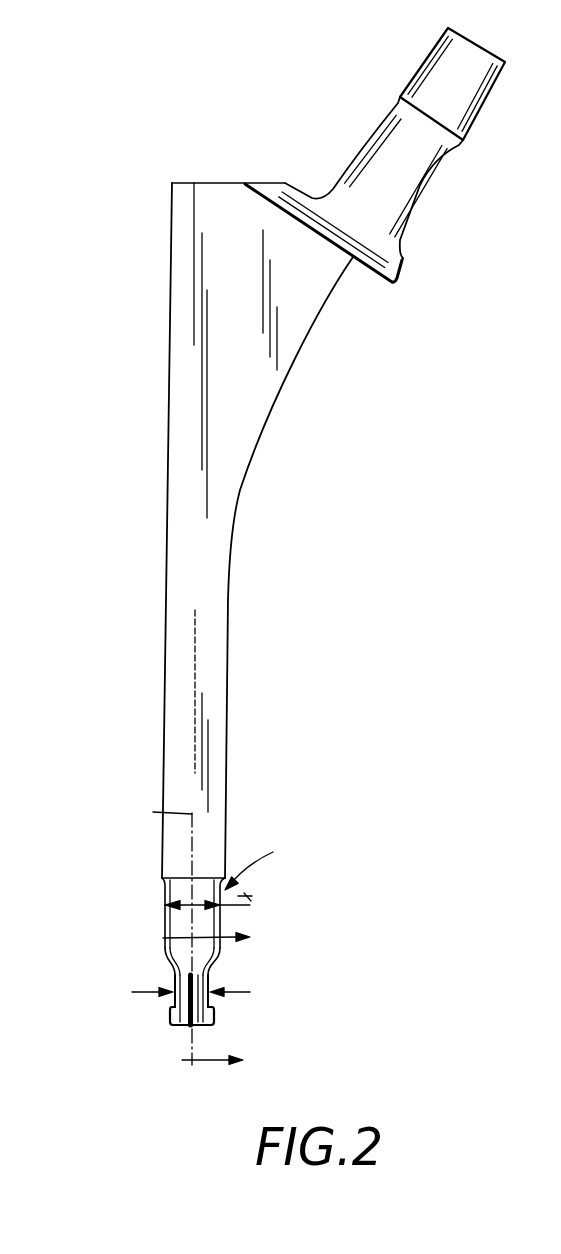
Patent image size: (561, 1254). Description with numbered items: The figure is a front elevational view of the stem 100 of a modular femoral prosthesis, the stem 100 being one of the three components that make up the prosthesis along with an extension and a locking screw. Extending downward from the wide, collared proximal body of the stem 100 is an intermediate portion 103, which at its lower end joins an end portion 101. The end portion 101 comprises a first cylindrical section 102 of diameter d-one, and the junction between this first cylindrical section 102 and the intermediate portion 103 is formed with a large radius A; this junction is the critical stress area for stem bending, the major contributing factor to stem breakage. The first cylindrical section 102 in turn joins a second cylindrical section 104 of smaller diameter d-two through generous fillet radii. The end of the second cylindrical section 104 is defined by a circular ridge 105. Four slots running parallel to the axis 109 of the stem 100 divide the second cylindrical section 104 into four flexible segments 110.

The stem 100 is at (264, 555).
The end portion 101 is at (112, 907).
The first cylindrical section 102 is at (163, 938).
The intermediate portion 103 is at (163, 708).
The second cylindrical section 104 is at (173, 977).
The circular ridge 105 is at (187, 1016).
The axis 109 is at (153, 812).
The flexible segments 110 is at (173, 974).